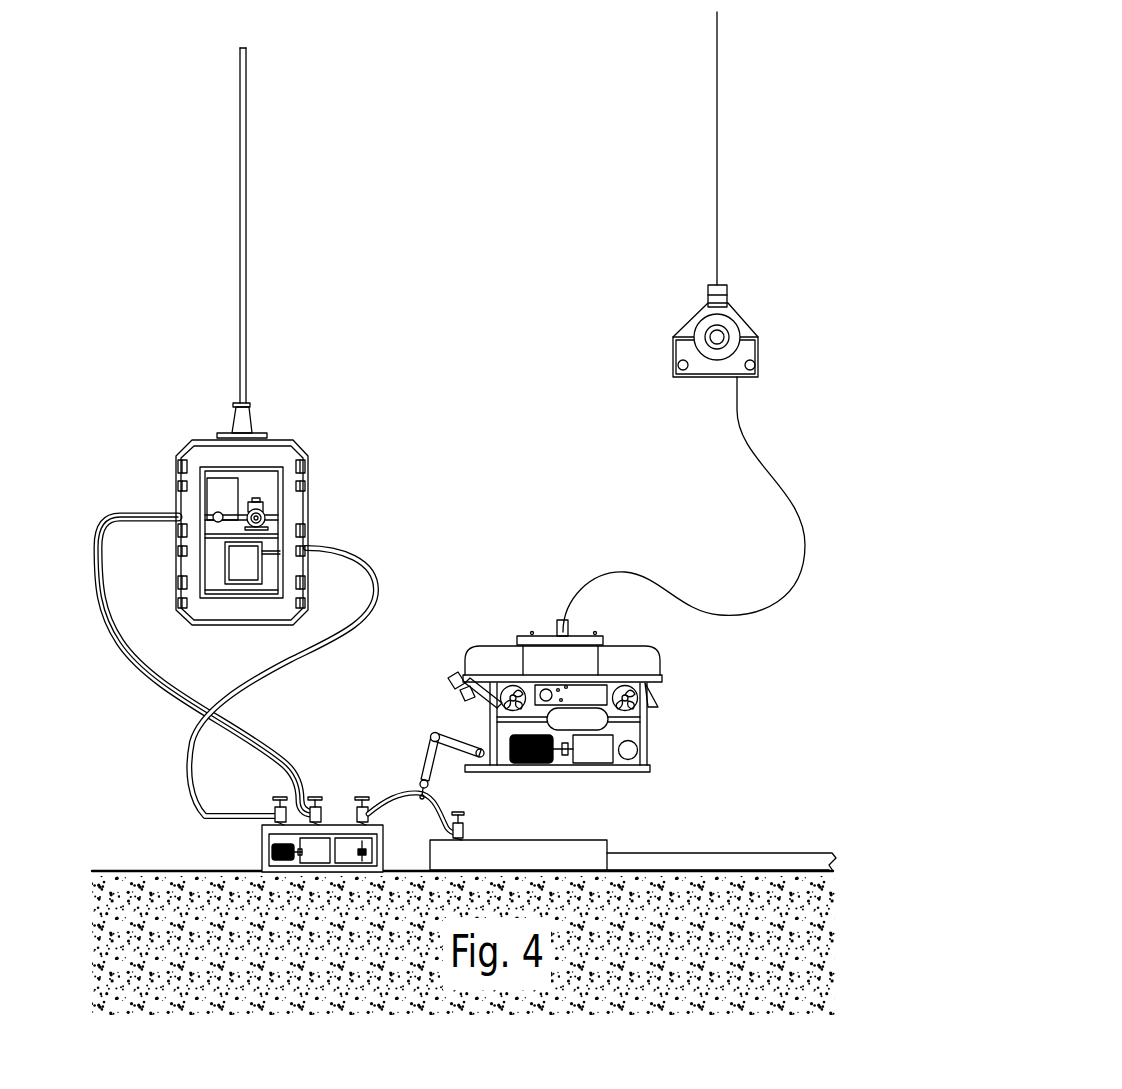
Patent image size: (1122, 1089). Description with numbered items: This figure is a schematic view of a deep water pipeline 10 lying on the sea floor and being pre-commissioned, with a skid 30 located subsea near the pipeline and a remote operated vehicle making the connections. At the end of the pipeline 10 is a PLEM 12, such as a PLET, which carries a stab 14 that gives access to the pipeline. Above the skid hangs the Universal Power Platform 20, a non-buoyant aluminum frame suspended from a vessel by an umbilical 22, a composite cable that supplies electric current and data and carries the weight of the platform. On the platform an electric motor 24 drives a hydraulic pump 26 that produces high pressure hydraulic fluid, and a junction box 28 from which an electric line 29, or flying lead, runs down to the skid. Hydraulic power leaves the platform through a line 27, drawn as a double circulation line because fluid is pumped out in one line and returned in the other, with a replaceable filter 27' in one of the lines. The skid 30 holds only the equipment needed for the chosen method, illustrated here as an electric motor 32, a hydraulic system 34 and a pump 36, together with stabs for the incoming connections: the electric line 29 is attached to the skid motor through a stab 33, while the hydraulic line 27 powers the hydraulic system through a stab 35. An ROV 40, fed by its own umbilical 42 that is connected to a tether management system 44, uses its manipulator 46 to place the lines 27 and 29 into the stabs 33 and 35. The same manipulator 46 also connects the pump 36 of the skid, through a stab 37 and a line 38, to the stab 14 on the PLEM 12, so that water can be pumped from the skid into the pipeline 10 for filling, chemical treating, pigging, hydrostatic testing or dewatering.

The deep water pipeline 10 is at (666, 862).
The PLEM 12 is at (496, 858).
The stab 14 is at (463, 826).
The Universal Power Platform 20 is at (297, 499).
The umbilical 22 is at (246, 343).
The electric motor 24 is at (227, 494).
The hydraulic pump 26 is at (268, 518).
The line 27 is at (205, 652).
The replaceable filter 27' is at (171, 487).
The junction box 28 is at (247, 558).
The electric line 29 is at (236, 684).
The skid 30 is at (259, 846).
The electric motor 32 is at (274, 853).
The stab 33 is at (276, 809).
The hydraulic system 34 is at (317, 812).
The stab 35 is at (322, 845).
The pump 36 is at (368, 845).
The stab 37 is at (367, 811).
The line 38 is at (450, 792).
The ROV 40 is at (649, 738).
The umbilical 42 is at (720, 150).
The tether management system 44 is at (745, 352).
The manipulator 46 is at (430, 746).